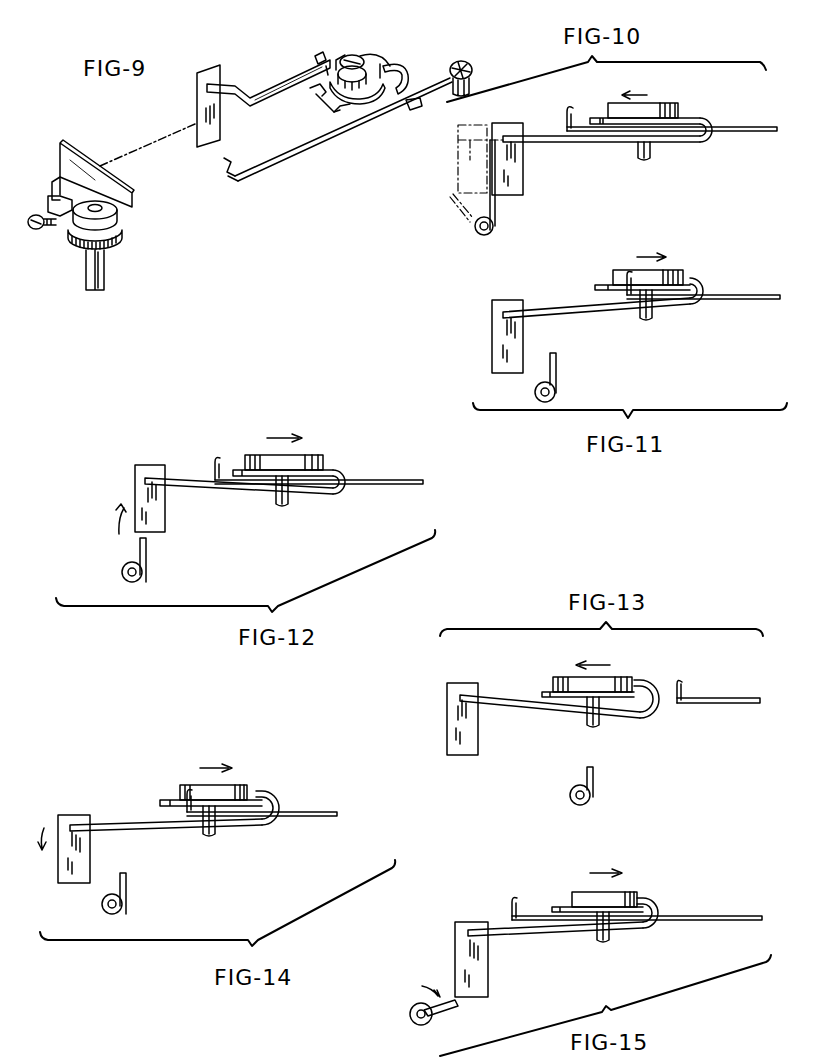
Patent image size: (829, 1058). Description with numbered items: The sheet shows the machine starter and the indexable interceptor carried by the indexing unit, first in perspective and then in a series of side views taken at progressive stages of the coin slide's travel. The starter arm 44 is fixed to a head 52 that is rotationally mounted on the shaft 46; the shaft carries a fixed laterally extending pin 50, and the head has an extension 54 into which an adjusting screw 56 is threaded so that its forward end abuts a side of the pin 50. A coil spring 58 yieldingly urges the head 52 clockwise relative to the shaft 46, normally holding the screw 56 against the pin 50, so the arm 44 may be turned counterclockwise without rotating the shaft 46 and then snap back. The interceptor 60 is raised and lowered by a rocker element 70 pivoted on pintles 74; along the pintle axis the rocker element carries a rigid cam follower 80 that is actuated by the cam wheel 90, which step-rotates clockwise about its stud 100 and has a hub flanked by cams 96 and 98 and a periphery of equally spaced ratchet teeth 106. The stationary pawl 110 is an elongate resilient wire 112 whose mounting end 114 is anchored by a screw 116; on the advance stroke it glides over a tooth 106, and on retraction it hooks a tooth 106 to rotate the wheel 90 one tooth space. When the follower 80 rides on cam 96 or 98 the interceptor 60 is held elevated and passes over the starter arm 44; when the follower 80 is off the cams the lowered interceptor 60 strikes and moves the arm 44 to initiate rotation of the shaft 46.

In FIG. 9, the starter arm 44 is at (72, 146).
In FIG. 10, the starter arm 44 is at (496, 208).
In FIG. 11, the starter arm 44 is at (557, 366).
In FIG. 12, the starter arm 44 is at (147, 560).
In FIG. 13, the starter arm 44 is at (594, 788).
In FIG. 14, the starter arm 44 is at (127, 888).
In FIG. 15, the starter arm 44 is at (450, 1010).
In FIG. 9, the shaft 46 is at (88, 270).
In FIG. 10, the shaft 46 is at (478, 234).
In FIG. 11, the shaft 46 is at (535, 395).
In FIG. 12, the shaft 46 is at (122, 570).
In FIG. 13, the shaft 46 is at (570, 798).
In FIG. 14, the shaft 46 is at (104, 906).
In FIG. 15, the shaft 46 is at (410, 1010).
In FIG. 9, the pin 50 is at (55, 182).
In FIG. 9, the head 52 is at (118, 222).
In FIG. 9, the extension 54 is at (49, 200).
In FIG. 9, the adjusting screw 56 is at (42, 216).
In FIG. 9, the coil spring 58 is at (72, 244).
In FIG. 9, the interceptor 60 is at (198, 106).
In FIG. 10, the interceptor 60 is at (522, 180).
In FIG. 11, the interceptor 60 is at (492, 348).
In FIG. 12, the interceptor 60 is at (164, 508).
In FIG. 13, the interceptor 60 is at (452, 738).
In FIG. 14, the interceptor 60 is at (58, 872).
In FIG. 15, the interceptor 60 is at (455, 954).
In FIG. 9, the rocker element 70 is at (268, 78).
In FIG. 10, the rocker element 70 is at (573, 142).
In FIG. 11, the rocker element 70 is at (590, 318).
In FIG. 12, the rocker element 70 is at (246, 494).
In FIG. 13, the rocker element 70 is at (566, 718).
In FIG. 14, the rocker element 70 is at (144, 828).
In FIG. 15, the rocker element 70 is at (540, 936).
In FIG. 9, the pintles 74 is at (318, 54).
In FIG. 9, the cam follower 80 is at (392, 60).
In FIG. 10, the cam follower 80 is at (706, 116).
In FIG. 11, the cam follower 80 is at (703, 276).
In FIG. 12, the cam follower 80 is at (340, 468).
In FIG. 13, the cam follower 80 is at (650, 684).
In FIG. 14, the cam follower 80 is at (268, 790).
In FIG. 15, the cam follower 80 is at (655, 898).
In FIG. 9, the cam wheel 90 is at (314, 94).
In FIG. 10, the cam wheel 90 is at (608, 124).
In FIG. 11, the cam wheel 90 is at (596, 287).
In FIG. 12, the cam wheel 90 is at (340, 476).
In FIG. 13, the cam wheel 90 is at (540, 692).
In FIG. 14, the cam wheel 90 is at (160, 802).
In FIG. 15, the cam wheel 90 is at (562, 920).
In FIG. 9, the cam 96 is at (352, 54).
In FIG. 10, the cam 96 is at (668, 102).
In FIG. 11, the cam 96 is at (678, 270).
In FIG. 12, the cam 96 is at (314, 455).
In FIG. 13, the cam 96 is at (626, 677).
In FIG. 14, the cam 96 is at (246, 786).
In FIG. 15, the cam 96 is at (634, 892).
In FIG. 9, the cam 98 is at (372, 98).
In FIG. 10, the cam 98 is at (622, 103).
In FIG. 11, the cam 98 is at (638, 277).
In FIG. 12, the cam 98 is at (250, 455).
In FIG. 13, the cam 98 is at (556, 677).
In FIG. 14, the cam 98 is at (180, 788).
In FIG. 15, the cam 98 is at (568, 892).
In FIG. 9, the stud 100 is at (358, 56).
In FIG. 9, the ratchet teeth 106 is at (336, 114).
In FIG. 9, the pawl 110 is at (228, 170).
In FIG. 10, the pawl 110 is at (567, 112).
In FIG. 11, the pawl 110 is at (628, 274).
In FIG. 12, the pawl 110 is at (216, 462).
In FIG. 13, the pawl 110 is at (684, 683).
In FIG. 14, the pawl 110 is at (188, 792).
In FIG. 15, the pawl 110 is at (513, 901).
In FIG. 9, the resilient wire 112 is at (297, 152).
In FIG. 10, the resilient wire 112 is at (738, 131).
In FIG. 11, the resilient wire 112 is at (738, 299).
In FIG. 12, the resilient wire 112 is at (382, 486).
In FIG. 13, the resilient wire 112 is at (712, 703).
In FIG. 14, the resilient wire 112 is at (312, 816).
In FIG. 15, the resilient wire 112 is at (712, 920).
In FIG. 9, the mounting end 114 is at (450, 76).
In FIG. 9, the screw 116 is at (466, 62).